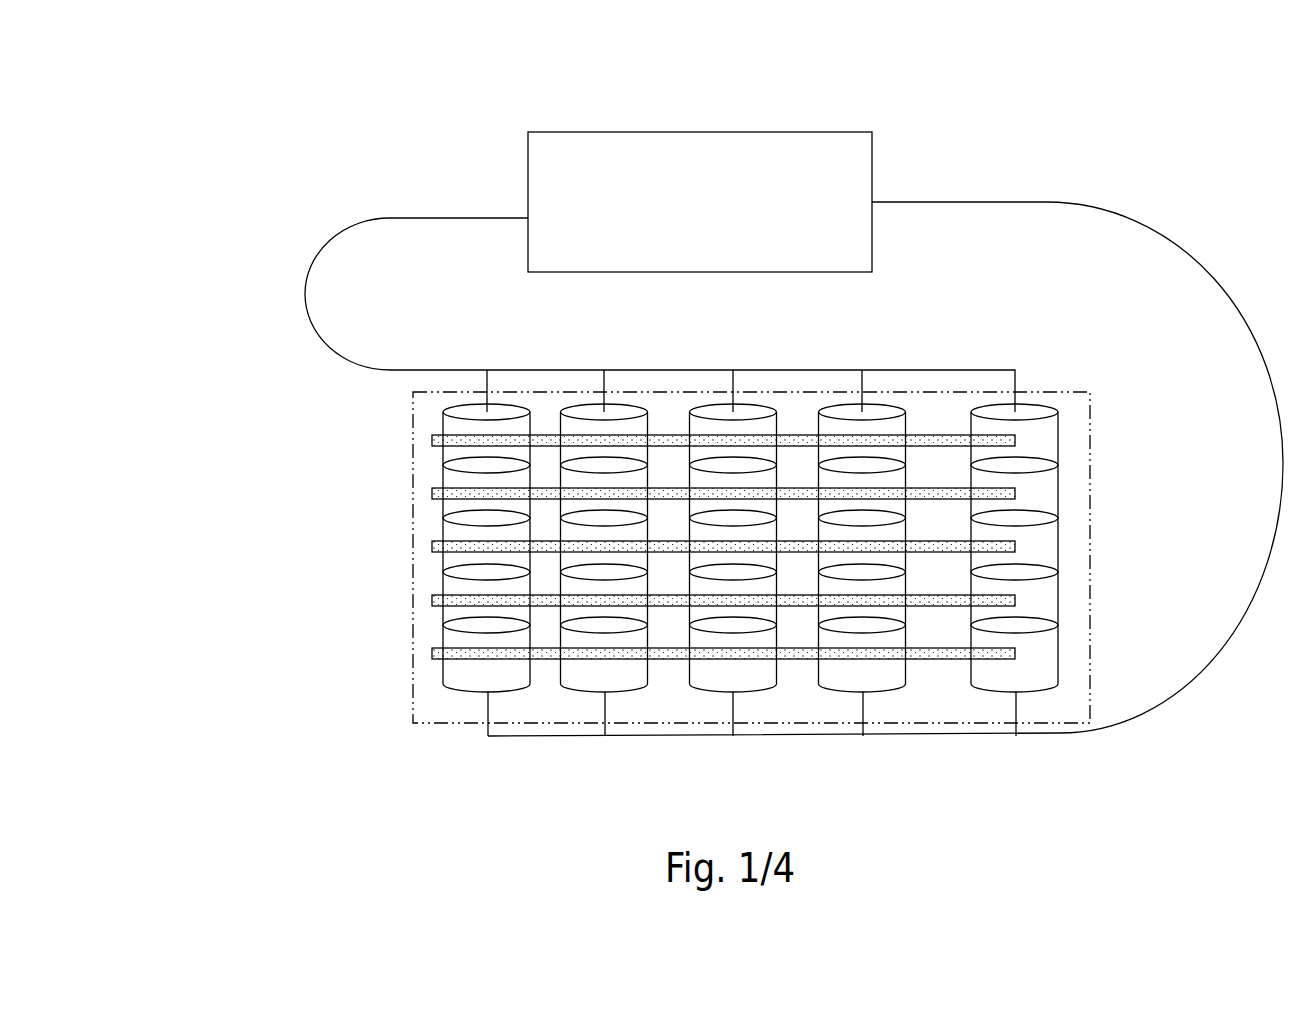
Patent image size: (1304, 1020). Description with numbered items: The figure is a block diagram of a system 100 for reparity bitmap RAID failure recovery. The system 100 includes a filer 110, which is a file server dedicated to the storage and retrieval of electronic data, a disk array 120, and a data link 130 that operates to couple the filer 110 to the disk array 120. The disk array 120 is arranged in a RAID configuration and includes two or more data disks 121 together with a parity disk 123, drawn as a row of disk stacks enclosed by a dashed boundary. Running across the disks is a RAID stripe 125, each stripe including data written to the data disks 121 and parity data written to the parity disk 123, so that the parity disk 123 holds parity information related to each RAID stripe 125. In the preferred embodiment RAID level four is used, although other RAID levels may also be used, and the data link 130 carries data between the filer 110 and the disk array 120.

The system 100 is at (1030, 110).
The filer 110 is at (700, 169).
The disk array 120 is at (699, 600).
The data disk 121 is at (520, 672).
The parity disk 123 is at (1105, 595).
The RAID stripe 125 is at (601, 514).
The data link 130 is at (725, 446).